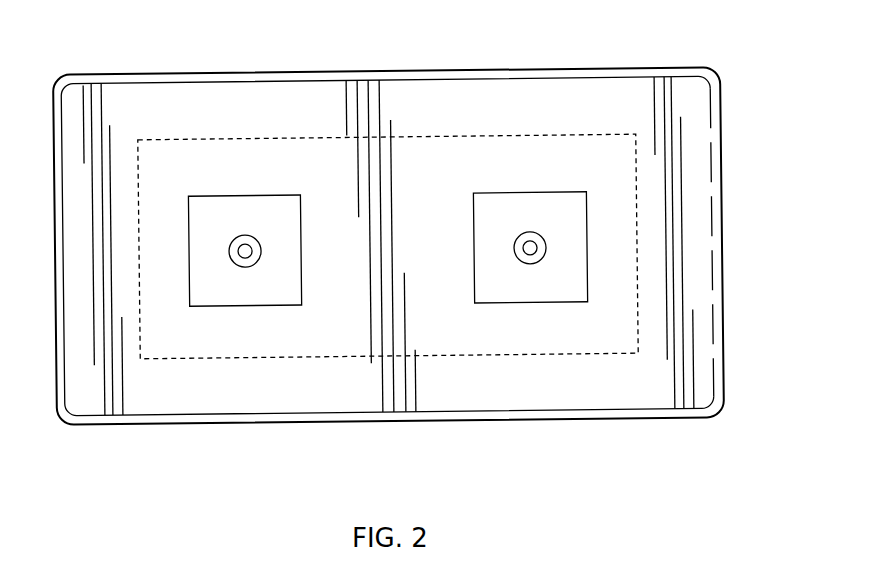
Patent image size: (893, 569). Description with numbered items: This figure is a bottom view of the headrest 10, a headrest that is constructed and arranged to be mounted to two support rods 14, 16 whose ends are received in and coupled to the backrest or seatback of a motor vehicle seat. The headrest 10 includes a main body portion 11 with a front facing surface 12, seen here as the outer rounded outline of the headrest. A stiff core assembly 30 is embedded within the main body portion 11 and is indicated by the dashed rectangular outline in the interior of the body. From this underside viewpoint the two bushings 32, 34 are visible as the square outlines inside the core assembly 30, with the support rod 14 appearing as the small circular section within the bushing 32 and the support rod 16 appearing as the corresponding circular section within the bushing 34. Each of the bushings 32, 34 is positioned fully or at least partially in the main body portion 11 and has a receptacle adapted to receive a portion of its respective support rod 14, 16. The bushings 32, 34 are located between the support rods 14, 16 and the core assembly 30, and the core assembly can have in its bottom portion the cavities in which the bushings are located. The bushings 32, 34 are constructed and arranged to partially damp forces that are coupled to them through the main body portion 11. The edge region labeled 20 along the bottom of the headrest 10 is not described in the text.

The headrest 10 is at (120, 60).
The main body portion 11 is at (705, 262).
The front facing surface 12 is at (500, 70).
The support rod 14 is at (238, 266).
The support rod 16 is at (526, 265).
The bottom edge of housing 20 is at (605, 420).
The stiff core assembly 30 is at (513, 135).
The bushing 32 is at (264, 195).
The bushing 34 is at (550, 195).